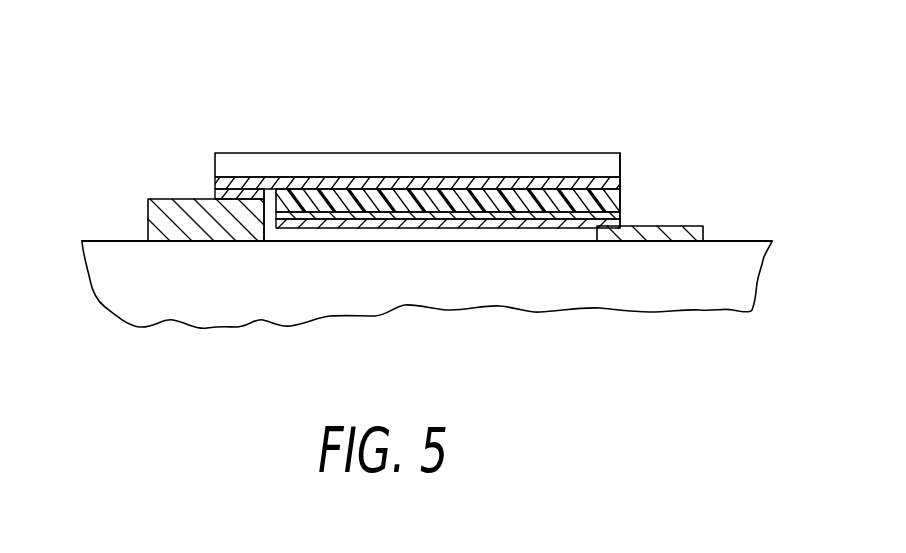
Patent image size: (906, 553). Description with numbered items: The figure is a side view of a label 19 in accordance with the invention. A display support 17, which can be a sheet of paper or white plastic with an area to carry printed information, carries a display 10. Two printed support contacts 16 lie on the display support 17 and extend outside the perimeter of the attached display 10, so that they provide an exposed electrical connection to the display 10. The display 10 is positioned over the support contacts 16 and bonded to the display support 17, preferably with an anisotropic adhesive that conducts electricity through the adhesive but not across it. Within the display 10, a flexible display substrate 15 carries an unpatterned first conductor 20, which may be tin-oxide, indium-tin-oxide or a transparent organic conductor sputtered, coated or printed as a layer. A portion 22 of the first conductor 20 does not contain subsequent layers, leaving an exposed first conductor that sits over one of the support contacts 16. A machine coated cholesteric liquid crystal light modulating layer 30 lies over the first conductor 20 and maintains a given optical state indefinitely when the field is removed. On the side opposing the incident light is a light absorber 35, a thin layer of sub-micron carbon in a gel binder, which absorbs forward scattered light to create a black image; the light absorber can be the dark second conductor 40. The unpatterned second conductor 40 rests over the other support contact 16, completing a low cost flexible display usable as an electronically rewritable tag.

The display 10 is at (422, 128).
The display substrate 15 is at (547, 162).
The support contacts 16 is at (153, 220).
The display support 17 is at (173, 308).
The label 19 is at (217, 112).
The first conductor 20 is at (620, 180).
The portion of first conductor 22 is at (240, 190).
The cholesteric liquid crystal light modulating layer 30 is at (622, 192).
The light absorber 35 is at (523, 215).
The second conductor 40 is at (567, 230).